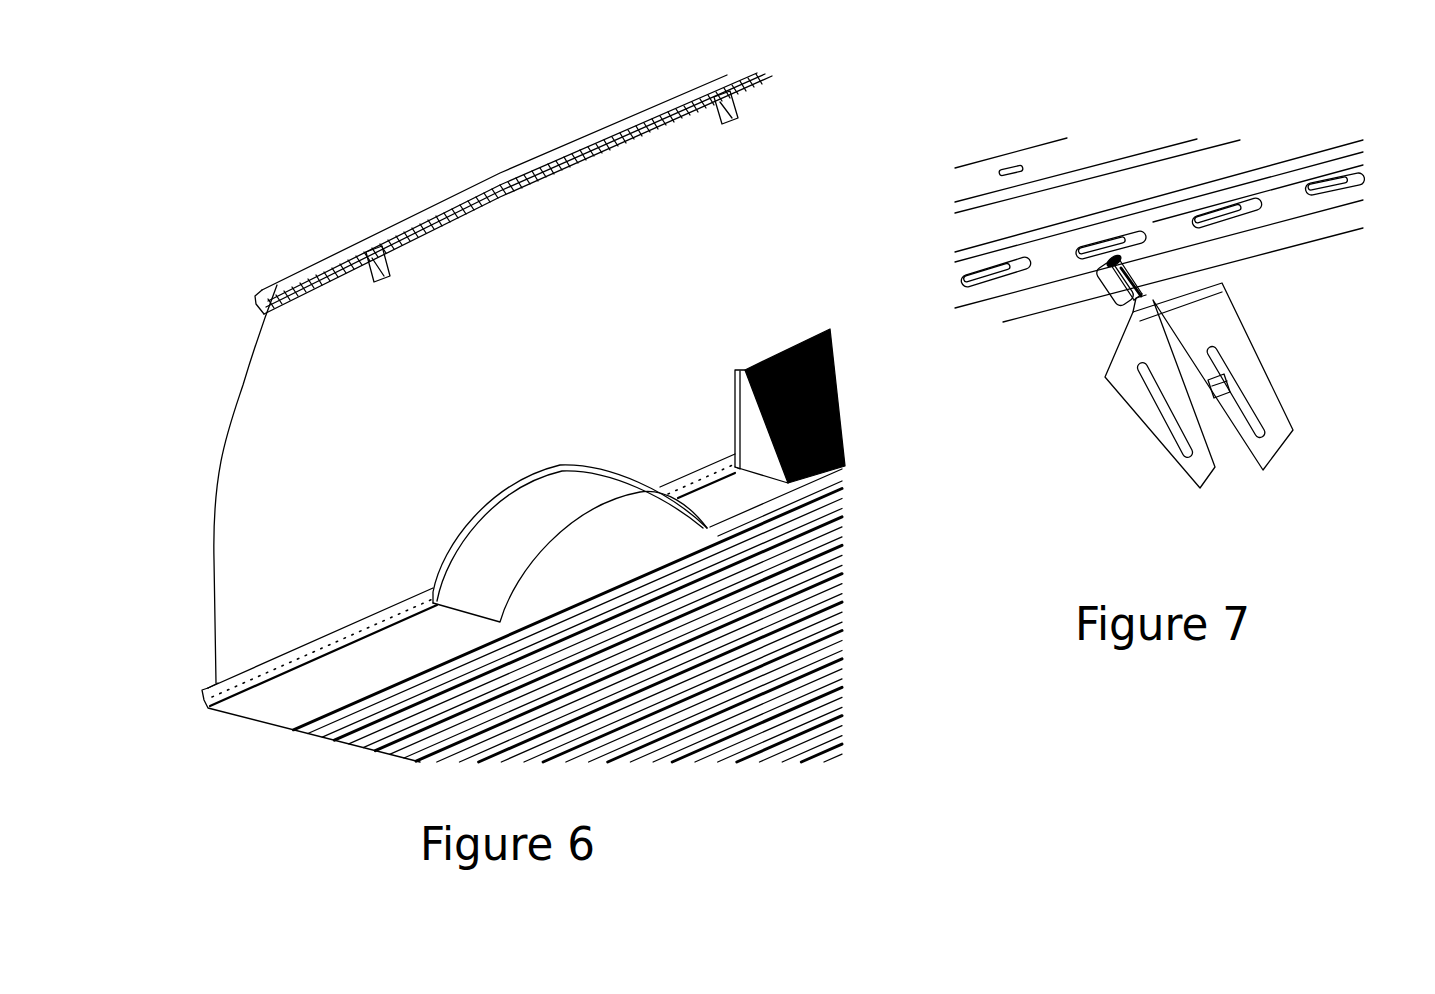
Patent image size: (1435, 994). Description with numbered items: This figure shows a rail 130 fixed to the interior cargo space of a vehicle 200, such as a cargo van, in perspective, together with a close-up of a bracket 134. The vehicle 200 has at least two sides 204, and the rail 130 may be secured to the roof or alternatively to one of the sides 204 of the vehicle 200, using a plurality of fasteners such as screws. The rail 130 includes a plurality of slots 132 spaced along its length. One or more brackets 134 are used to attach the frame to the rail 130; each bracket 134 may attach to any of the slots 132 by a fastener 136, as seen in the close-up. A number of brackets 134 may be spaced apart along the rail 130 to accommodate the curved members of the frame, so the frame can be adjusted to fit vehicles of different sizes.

In FIG. 6, the vehicle 200 is at (255, 170).
In FIG. 6, the sides 204 is at (253, 445).
In FIG. 6, the rail 130 is at (528, 180).
In FIG. 7, the rail 130 is at (1263, 157).
In FIG. 6, the bracket 134 is at (382, 273).
In FIG. 7, the bracket 134 is at (1127, 395).
In FIG. 7, the slots 132 is at (1122, 246).
In FIG. 7, the fastener 136 is at (1120, 295).